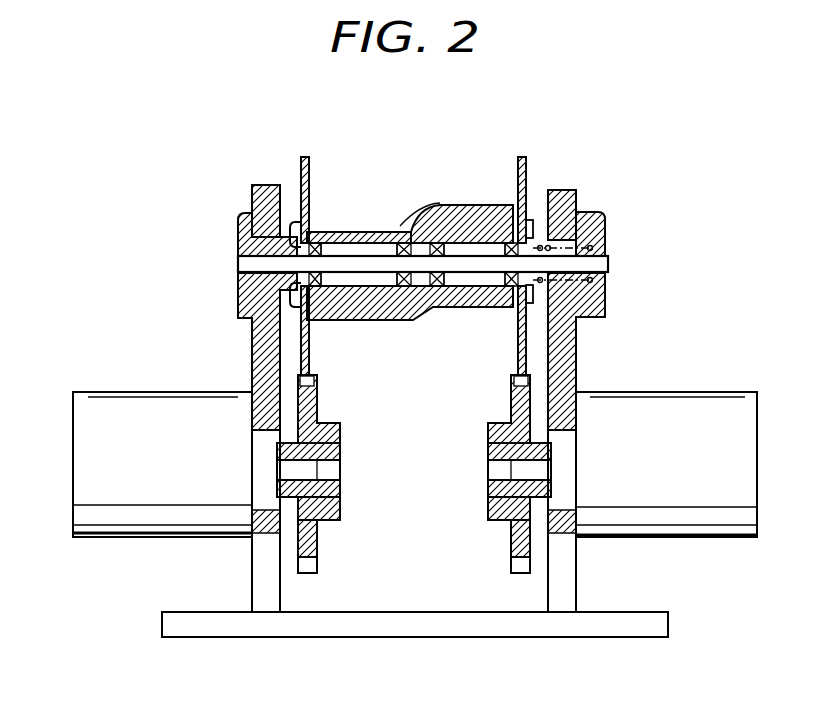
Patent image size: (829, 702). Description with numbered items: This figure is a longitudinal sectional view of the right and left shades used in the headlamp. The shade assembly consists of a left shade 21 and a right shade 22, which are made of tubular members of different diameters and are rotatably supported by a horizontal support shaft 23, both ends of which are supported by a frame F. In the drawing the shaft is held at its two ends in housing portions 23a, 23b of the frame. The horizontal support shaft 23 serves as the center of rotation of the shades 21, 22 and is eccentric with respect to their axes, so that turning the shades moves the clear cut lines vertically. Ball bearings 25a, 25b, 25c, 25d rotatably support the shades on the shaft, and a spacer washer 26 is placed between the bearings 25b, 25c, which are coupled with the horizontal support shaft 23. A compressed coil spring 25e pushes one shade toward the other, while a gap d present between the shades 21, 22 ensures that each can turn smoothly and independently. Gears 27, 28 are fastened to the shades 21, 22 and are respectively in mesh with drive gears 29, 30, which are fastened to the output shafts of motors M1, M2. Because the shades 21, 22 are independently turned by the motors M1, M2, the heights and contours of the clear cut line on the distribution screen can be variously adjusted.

The left shade 21 is at (498, 254).
The right shade 22 is at (340, 232).
The horizontal support shaft 23 is at (238, 268).
The right housing half 23a is at (602, 212).
The left housing half 23b is at (238, 236).
The ball bearing 25a is at (322, 215).
The ball bearing 25b is at (385, 243).
The ball bearing 25c is at (449, 243).
The ball bearing 25d is at (490, 240).
The compressed coil spring 25e is at (562, 240).
The spacer washer 26 is at (409, 232).
The gear 27 is at (517, 350).
The gear 28 is at (311, 345).
The drive gear 29 is at (511, 408).
The drive gear 30 is at (317, 398).
The frame F is at (257, 185).
The motor M1 is at (701, 392).
The motor M2 is at (118, 392).
The gap d is at (413, 322).